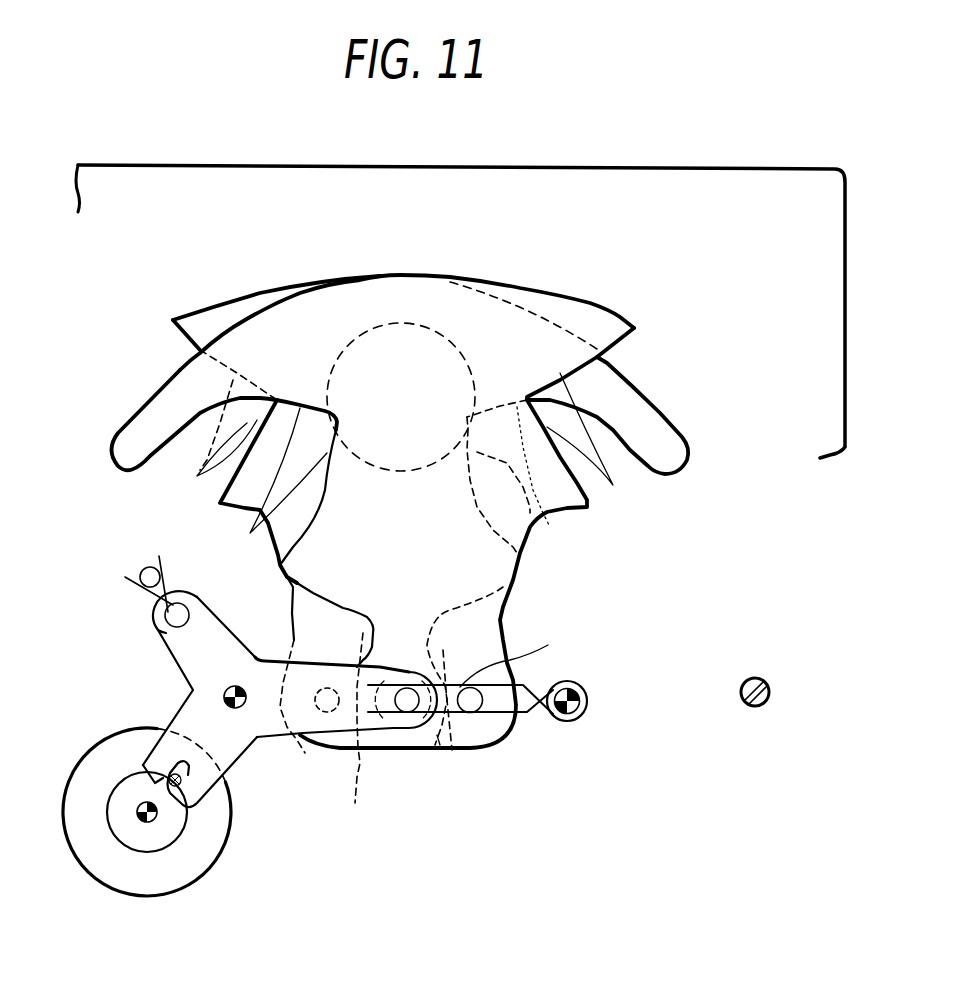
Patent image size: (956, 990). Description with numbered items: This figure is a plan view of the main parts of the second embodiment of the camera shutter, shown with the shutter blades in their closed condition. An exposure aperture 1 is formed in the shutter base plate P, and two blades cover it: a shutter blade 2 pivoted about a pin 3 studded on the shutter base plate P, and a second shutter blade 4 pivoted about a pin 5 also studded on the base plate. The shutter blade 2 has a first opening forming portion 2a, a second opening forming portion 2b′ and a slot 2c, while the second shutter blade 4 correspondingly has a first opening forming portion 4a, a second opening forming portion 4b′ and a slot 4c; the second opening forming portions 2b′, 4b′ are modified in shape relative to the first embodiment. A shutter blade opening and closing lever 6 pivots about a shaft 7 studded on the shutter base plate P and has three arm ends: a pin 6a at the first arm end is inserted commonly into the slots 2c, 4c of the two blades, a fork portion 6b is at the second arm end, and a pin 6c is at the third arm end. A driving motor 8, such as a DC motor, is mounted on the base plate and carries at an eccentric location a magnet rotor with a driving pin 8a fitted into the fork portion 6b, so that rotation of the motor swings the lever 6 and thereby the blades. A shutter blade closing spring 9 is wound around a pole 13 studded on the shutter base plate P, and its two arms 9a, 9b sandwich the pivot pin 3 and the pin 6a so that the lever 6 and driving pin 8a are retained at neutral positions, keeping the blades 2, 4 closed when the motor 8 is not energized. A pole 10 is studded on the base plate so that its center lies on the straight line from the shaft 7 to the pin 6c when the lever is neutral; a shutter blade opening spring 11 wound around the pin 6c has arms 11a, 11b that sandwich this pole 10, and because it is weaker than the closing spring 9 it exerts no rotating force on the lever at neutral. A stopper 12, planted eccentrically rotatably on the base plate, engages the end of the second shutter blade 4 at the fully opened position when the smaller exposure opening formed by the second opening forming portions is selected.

The shutter base plate P is at (690, 170).
The exposure aperture 1 is at (403, 325).
The shutter blade 2 is at (641, 327).
The first opening forming portion 2a is at (270, 485).
The second opening forming portion 2b′ is at (600, 444).
The slot 2c is at (349, 735).
The pin 3 is at (473, 713).
The second shutter blade 4 is at (170, 322).
The first opening forming portion 4a is at (550, 527).
The second opening forming portion 4b′ is at (207, 466).
The slot 4c is at (406, 744).
The pin 5 is at (330, 713).
The shutter blade opening and closing lever 6 is at (258, 656).
The pin 6a is at (404, 713).
The fork portion 6b is at (195, 776).
The pin 6c is at (162, 633).
The shaft 7 is at (224, 703).
The driving motor 8 is at (172, 897).
The driving pin 8a is at (183, 786).
The shutter blade closing spring 9 is at (527, 682).
The arm 9a is at (508, 651).
The arm 9b is at (437, 735).
The pole 10 is at (140, 571).
The shutter blade opening spring 11 is at (150, 598).
The arm 11a is at (159, 562).
The arm 11b is at (125, 577).
The stopper 12 is at (740, 695).
The pole 13 is at (565, 722).